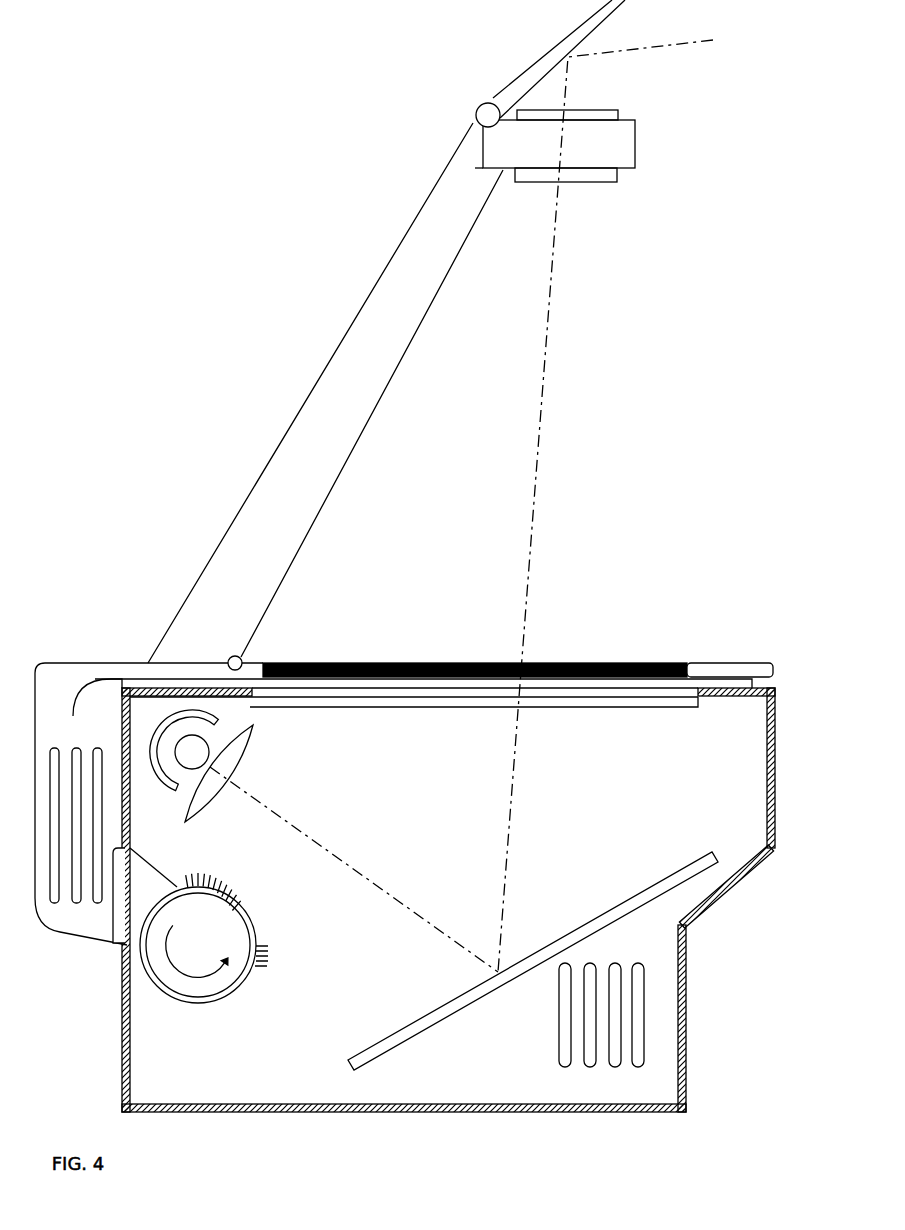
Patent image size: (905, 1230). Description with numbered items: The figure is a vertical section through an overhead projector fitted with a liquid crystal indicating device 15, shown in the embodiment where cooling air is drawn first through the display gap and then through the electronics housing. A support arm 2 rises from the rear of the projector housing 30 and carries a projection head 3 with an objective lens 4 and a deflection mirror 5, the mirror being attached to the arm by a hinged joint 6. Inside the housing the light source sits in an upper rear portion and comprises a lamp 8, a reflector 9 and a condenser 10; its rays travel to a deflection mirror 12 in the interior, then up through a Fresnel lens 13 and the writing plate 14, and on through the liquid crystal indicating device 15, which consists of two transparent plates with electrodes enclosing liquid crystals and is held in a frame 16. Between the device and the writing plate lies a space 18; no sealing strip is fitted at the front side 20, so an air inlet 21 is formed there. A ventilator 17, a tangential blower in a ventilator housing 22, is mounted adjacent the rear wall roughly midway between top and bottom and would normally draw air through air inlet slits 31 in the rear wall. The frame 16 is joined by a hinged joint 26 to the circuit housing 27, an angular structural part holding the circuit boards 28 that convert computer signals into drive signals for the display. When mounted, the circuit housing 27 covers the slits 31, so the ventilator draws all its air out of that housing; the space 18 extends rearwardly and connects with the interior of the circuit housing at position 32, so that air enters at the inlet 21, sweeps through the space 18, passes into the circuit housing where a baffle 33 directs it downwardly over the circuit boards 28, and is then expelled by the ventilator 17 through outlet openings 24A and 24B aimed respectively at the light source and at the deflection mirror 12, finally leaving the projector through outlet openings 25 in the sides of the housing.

The support arm 2 is at (432, 218).
The projection head 3 is at (617, 140).
The objective lens 4 is at (580, 173).
The deflection mirror 5 is at (562, 44).
The hinged joint 6 is at (486, 110).
The lamp 8 is at (243, 752).
The reflector 9 is at (200, 750).
The condenser 10 is at (254, 727).
The deflection mirror 12 is at (433, 1017).
The Fresnel lens 13 is at (427, 700).
The writing plate 14 is at (463, 692).
The liquid crystal indicating device 15 is at (543, 662).
The frame 16 is at (715, 672).
The ventilator 17 is at (203, 983).
The space 18 is at (150, 683).
The front side 20 is at (770, 852).
The air inlet 21 is at (780, 684).
The ventilator housing 22 is at (150, 982).
The outlet opening 24A is at (216, 872).
The outlet opening 24B is at (262, 968).
The outlet openings 25 is at (615, 1050).
The hinged joint 26 is at (241, 658).
The circuit housing 27 is at (54, 716).
The circuit boards 28 is at (97, 900).
The housing 30 is at (122, 1066).
The air inlet slits 31 is at (120, 895).
The position 32 is at (109, 690).
The baffle 33 is at (75, 708).